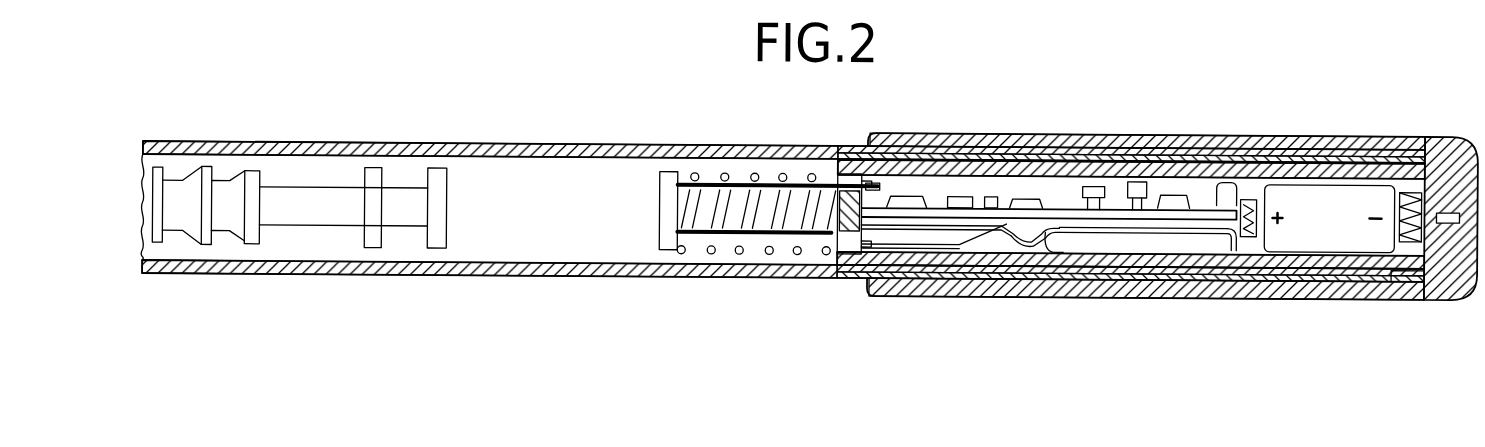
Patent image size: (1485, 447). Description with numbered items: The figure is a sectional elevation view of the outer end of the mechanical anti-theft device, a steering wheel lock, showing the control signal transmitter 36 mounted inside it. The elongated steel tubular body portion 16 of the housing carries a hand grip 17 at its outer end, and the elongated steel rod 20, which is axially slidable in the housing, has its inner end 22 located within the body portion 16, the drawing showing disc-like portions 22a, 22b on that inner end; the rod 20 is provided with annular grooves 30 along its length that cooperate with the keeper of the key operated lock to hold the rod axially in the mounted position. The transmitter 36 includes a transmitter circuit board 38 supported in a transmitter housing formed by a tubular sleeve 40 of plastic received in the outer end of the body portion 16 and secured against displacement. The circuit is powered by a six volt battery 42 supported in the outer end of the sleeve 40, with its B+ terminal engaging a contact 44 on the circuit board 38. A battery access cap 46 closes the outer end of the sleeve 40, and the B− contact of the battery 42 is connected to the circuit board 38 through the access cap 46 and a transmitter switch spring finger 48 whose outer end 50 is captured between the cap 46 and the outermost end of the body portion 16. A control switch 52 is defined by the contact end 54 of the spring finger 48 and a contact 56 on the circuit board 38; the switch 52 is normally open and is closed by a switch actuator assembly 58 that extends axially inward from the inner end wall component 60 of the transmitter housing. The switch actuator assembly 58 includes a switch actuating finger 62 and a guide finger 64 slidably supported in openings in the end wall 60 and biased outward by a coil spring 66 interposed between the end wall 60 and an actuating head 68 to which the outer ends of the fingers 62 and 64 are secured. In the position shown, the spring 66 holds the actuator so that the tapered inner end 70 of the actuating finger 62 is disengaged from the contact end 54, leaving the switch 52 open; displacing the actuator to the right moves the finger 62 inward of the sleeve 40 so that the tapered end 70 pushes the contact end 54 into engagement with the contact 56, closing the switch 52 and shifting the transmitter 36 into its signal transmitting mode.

The tubular body portion 16 is at (646, 134).
The hand grip 17 is at (1316, 127).
The steel rod 20 is at (214, 163).
The inner end of rod 22 is at (321, 175).
The plunger disc 22a is at (440, 249).
The plunger disc 22b is at (375, 248).
The annular grooves 30 is at (227, 243).
The control signal transmitter 36 is at (1073, 183).
The transmitter circuit board 38 is at (1221, 231).
The tubular sleeve 40 is at (1000, 157).
The battery 42 is at (1337, 183).
The contact 44 is at (1241, 192).
The battery access cap 46 is at (1449, 137).
The transmitter switch spring finger 48 is at (1166, 227).
The outer end of spring finger 50 is at (1394, 292).
The control switch 52 is at (1072, 232).
The contact end 54 is at (1050, 226).
The contact 56 is at (1010, 215).
The switch actuator assembly 58 is at (738, 172).
The inner end wall component 60 is at (845, 254).
The switch actuating finger 62 is at (795, 251).
The guide finger 64 is at (798, 180).
The coil spring 66 is at (735, 251).
The actuating head 68 is at (667, 247).
The tapered inner end 70 is at (1011, 230).